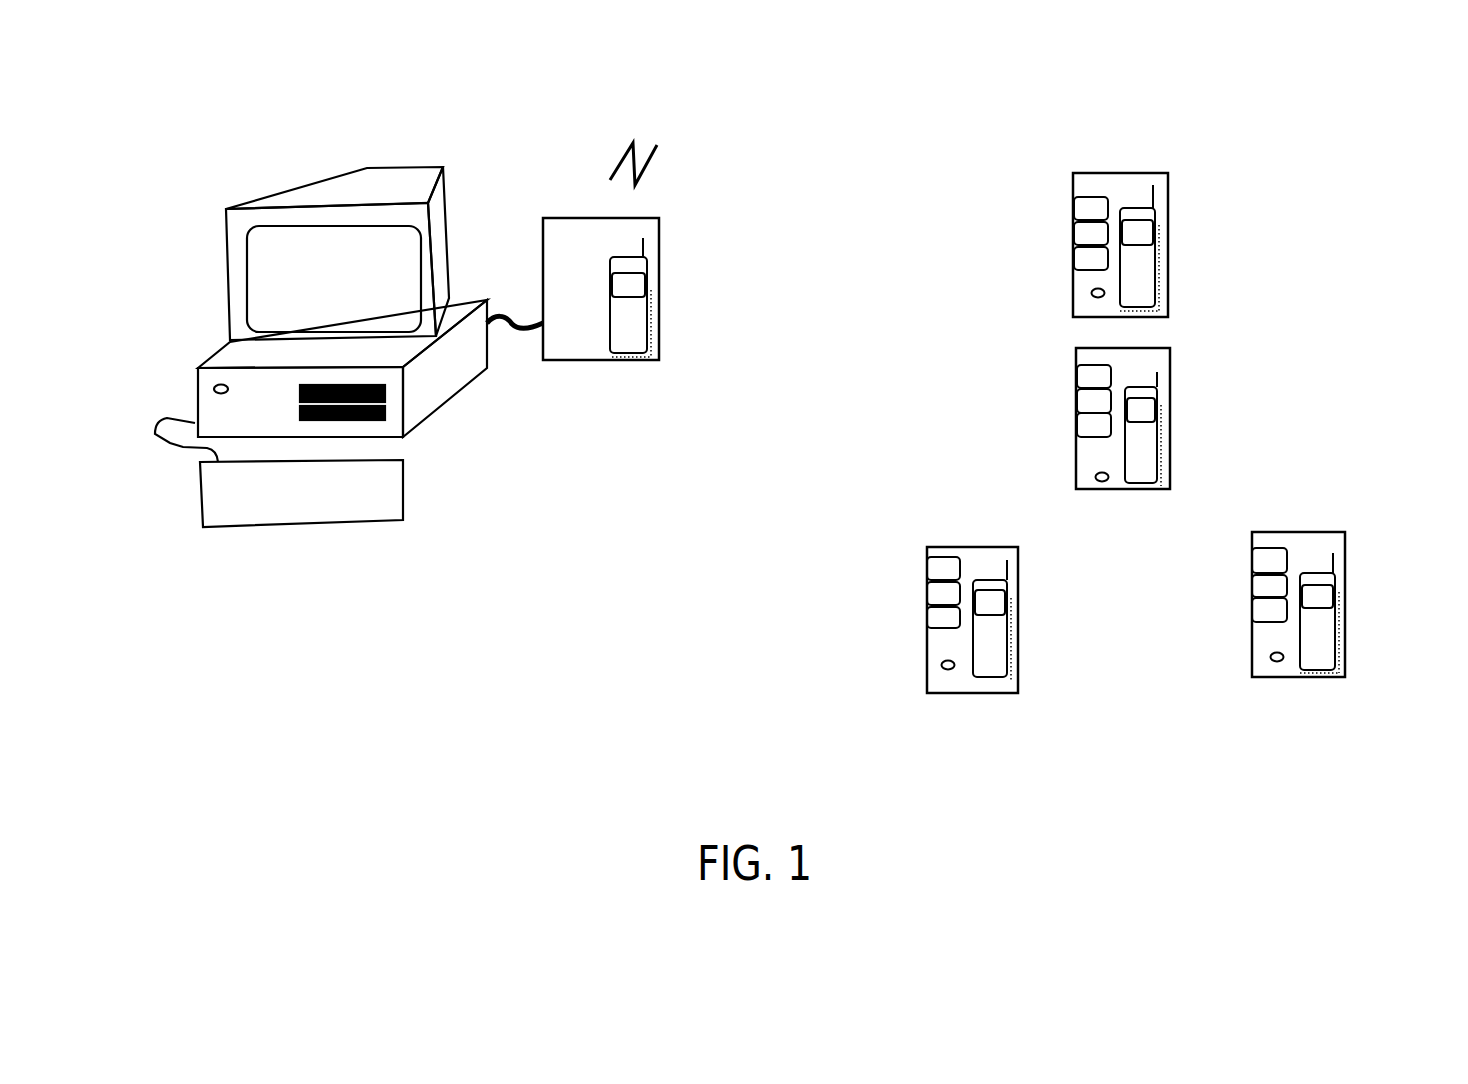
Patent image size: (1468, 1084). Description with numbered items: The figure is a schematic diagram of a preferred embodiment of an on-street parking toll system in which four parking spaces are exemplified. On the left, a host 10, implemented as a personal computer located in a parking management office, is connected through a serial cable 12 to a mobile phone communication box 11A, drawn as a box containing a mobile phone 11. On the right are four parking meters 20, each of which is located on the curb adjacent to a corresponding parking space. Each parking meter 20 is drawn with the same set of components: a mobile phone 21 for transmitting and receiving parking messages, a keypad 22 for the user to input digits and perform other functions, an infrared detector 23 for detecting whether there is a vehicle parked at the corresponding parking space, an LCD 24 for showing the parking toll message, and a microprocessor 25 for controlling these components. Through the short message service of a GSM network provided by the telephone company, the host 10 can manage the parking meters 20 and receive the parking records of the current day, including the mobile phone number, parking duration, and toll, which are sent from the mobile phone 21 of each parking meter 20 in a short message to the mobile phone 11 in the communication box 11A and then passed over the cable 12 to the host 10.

The host 10 is at (207, 278).
The mobile phone 11 is at (647, 293).
The mobile phone communication box 11A is at (584, 368).
The RS-232 cable 12 is at (517, 345).
The parking meter 20 is at (950, 367).
The mobile phone 21 is at (1155, 272).
The keypad 22 is at (1073, 257).
The infrared detector 23 is at (1092, 293).
The LCD 24 is at (1077, 230).
The microprocessor 25 is at (1093, 210).